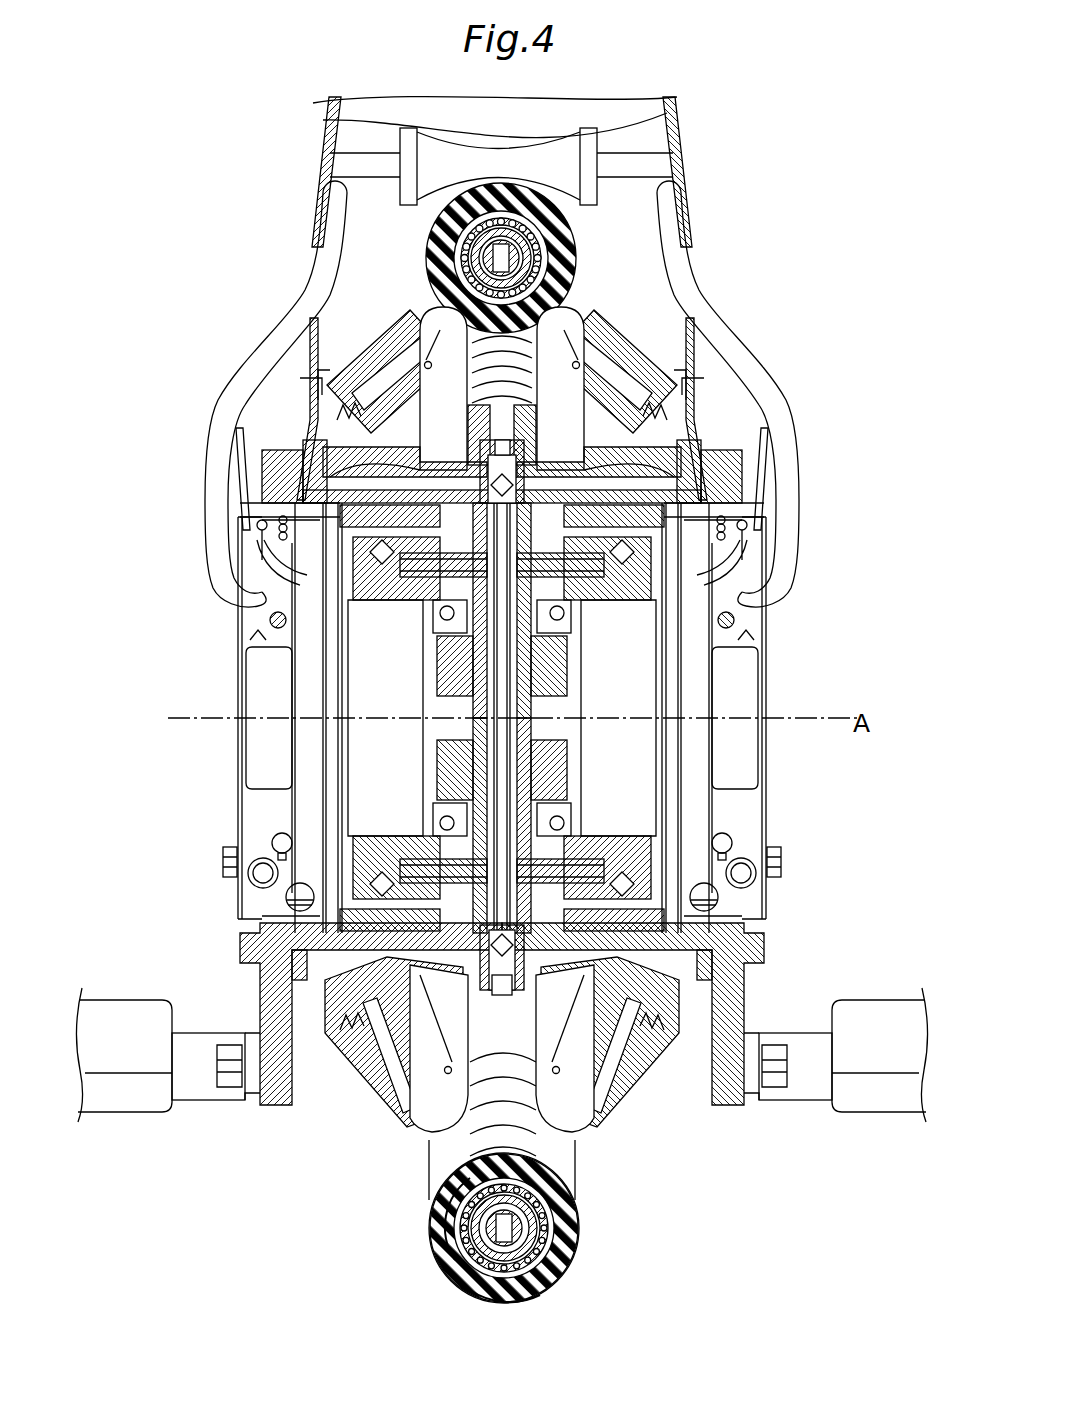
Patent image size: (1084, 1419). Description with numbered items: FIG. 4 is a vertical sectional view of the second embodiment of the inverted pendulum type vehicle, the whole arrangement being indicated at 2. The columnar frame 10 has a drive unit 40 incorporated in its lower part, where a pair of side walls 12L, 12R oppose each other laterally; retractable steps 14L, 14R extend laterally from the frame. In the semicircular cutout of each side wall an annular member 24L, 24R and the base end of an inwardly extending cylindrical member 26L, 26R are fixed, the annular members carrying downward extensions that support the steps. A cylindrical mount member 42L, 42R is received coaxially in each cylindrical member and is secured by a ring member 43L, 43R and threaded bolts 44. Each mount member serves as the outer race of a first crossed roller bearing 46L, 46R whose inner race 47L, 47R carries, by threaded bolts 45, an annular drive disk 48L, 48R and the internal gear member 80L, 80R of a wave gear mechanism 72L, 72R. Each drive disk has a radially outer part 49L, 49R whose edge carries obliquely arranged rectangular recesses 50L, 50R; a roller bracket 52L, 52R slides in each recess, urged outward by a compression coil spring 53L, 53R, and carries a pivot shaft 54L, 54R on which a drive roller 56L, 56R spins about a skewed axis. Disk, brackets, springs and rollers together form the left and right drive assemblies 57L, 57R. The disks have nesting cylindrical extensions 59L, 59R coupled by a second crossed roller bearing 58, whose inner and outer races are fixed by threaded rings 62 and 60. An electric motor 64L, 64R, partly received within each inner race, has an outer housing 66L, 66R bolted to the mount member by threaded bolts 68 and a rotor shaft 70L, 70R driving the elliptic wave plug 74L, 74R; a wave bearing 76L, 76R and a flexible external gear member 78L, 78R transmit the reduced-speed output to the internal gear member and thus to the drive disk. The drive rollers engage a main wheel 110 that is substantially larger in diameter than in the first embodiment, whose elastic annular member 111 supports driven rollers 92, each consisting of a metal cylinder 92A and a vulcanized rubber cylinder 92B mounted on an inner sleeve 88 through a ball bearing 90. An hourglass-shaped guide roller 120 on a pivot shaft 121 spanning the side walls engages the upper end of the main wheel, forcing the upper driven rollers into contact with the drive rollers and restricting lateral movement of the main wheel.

The bicycle 2 is at (230, 128).
The columnar frame 10 is at (688, 138).
The side wall 12R is at (312, 232).
The side wall 12L is at (700, 365).
The retractable step 14R is at (144, 1000).
The retractable step 14L is at (862, 1000).
The annular member 24R is at (262, 467).
The annular member 24L is at (745, 468).
The cylindrical member 26R is at (303, 470).
The cylindrical member 26L is at (700, 472).
The drive unit 40 is at (331, 1071).
The cylindrical mount member 42R is at (268, 575).
The cylindrical mount member 42L is at (740, 575).
The ring member 43R is at (257, 543).
The ring member 43L is at (745, 565).
The threaded bolts 44 is at (325, 518).
The threaded bolts 45 is at (260, 635).
The first crossed roller bearing 46R is at (330, 470).
The first crossed roller bearing 46L is at (700, 460).
The inner race 47R is at (268, 616).
The inner race 47L is at (736, 616).
The drive disk 48R is at (314, 444).
The drive disk 48L is at (690, 444).
The radially outer part 49R is at (325, 985).
The radially outer part 49L is at (680, 988).
The rectangular recess 50R is at (332, 1030).
The rectangular recess 50L is at (672, 1030).
The roller bracket 52R is at (372, 1108).
The roller bracket 52L is at (632, 1109).
The compression coil spring 53R is at (335, 395).
The compression coil spring 53L is at (698, 405).
The pivot shaft 54R is at (395, 348).
The pivot shaft 54L is at (613, 373).
The drive roller 56R is at (412, 1128).
The drive roller 56L is at (592, 1118).
The right drive assembly 57R is at (305, 225).
The left drive assembly 57L is at (672, 178).
The second crossed roller bearing 58 is at (507, 438).
The cylindrical extension 59R is at (358, 410).
The cylindrical extension 59L is at (607, 387).
The threaded ring 60 is at (383, 296).
The threaded ring 62 is at (497, 437).
The electric motor 64R is at (292, 735).
The electric motor 64L is at (712, 735).
The outer housing 66R is at (327, 683).
The outer housing 66L is at (690, 683).
The threaded bolts 68 is at (680, 922).
The rotor shaft 70R is at (353, 725).
The rotor shaft 70L is at (653, 725).
The wave gear mechanism 72R is at (425, 822).
The wave gear mechanism 72L is at (579, 822).
The wave plug 74R is at (420, 688).
The wave plug 74L is at (584, 688).
The wave bearing 76R is at (423, 653).
The wave bearing 76L is at (580, 653).
The flexible external gear member 78R is at (322, 628).
The flexible external gear member 78L is at (690, 628).
The internal gear member 80R is at (325, 652).
The internal gear member 80L is at (690, 653).
The inner sleeve 88 is at (552, 1212).
The ball bearing 90 is at (570, 1243).
The driven roller 92 is at (450, 1270).
The metal cylinder 92A is at (472, 1290).
The rubber cylinder 92B is at (440, 1263).
The main wheel 110 is at (577, 1281).
The annular member 111 is at (536, 1290).
The guide roller 120 is at (345, 124).
The pivot shaft 121 is at (672, 117).